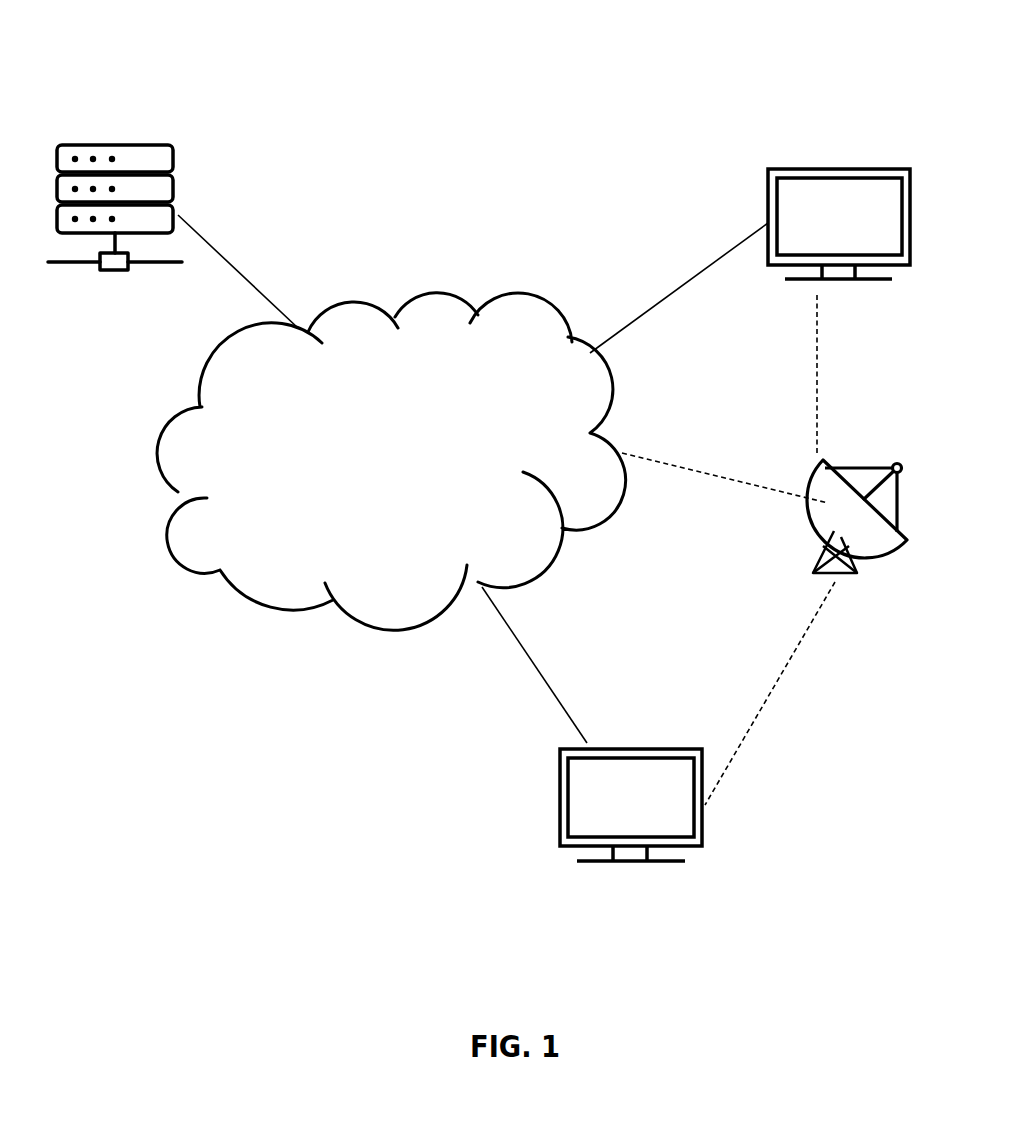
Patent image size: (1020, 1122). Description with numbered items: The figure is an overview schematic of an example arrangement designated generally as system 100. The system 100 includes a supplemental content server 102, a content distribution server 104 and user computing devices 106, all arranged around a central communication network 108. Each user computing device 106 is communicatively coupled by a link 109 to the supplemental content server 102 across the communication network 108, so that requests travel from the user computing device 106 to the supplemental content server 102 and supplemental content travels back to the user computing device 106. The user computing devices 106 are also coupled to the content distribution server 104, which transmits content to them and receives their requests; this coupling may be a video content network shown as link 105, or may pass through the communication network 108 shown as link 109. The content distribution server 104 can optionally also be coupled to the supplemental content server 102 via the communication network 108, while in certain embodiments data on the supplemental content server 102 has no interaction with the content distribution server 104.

The system 100 is at (393, 86).
The supplemental content server 102 is at (77, 143).
The content distribution server 104 is at (862, 460).
The link 105 is at (817, 368).
The user computing device 106 is at (770, 183).
The communication network 108 is at (180, 423).
The link 109 is at (259, 290).